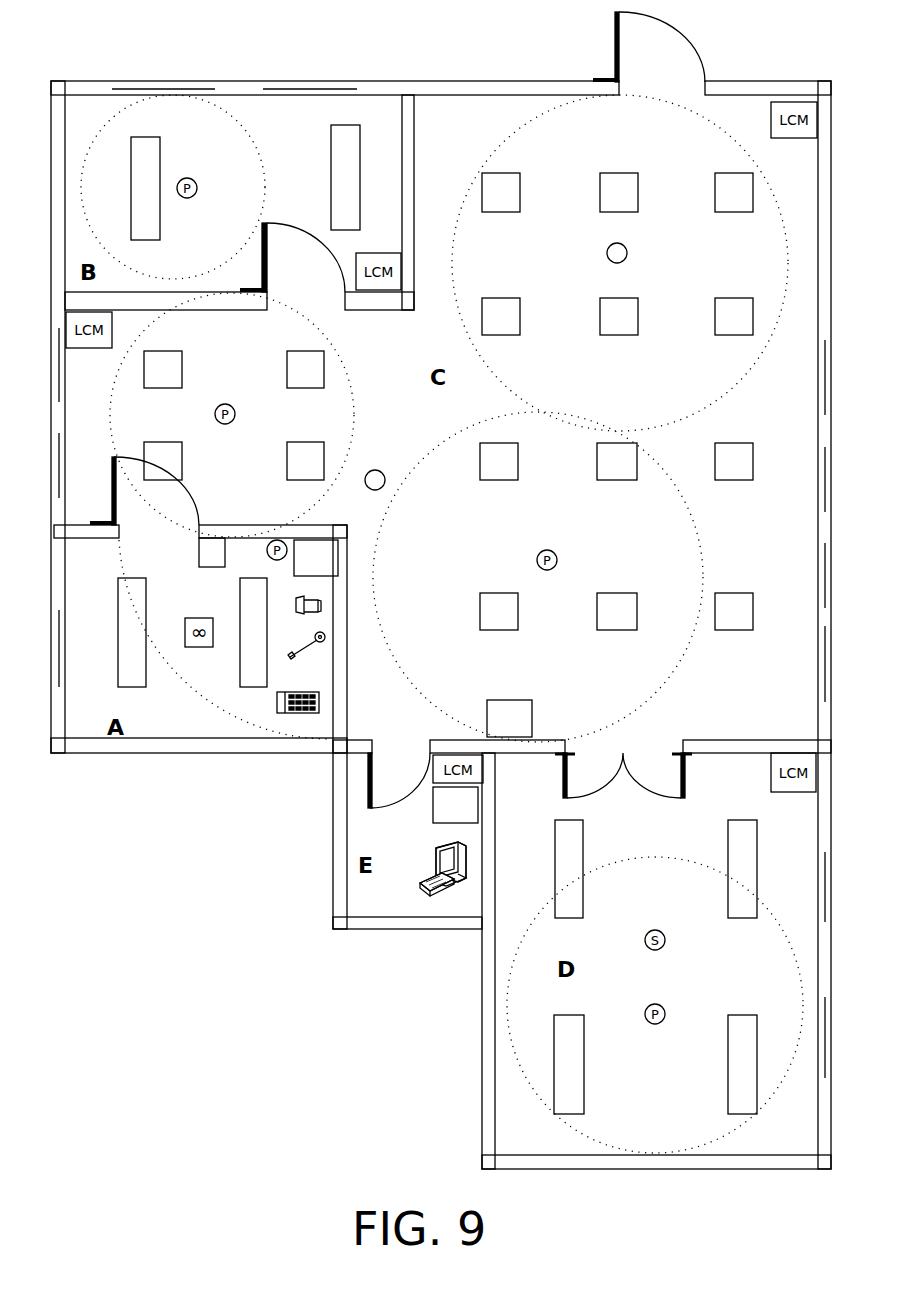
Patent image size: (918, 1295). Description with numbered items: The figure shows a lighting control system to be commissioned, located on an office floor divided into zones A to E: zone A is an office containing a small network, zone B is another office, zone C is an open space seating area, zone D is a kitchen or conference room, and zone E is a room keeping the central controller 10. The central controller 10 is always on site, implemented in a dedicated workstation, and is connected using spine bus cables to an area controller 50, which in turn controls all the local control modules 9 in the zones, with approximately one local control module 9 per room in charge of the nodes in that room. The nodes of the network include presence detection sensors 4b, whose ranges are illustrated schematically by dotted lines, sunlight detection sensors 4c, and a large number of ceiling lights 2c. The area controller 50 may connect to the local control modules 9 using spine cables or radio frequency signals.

The ceiling lights 2c is at (735, 298).
The presence detection sensors 4b is at (607, 253).
The sunlight detection sensors 4c is at (376, 470).
The local control modules 9 is at (338, 560).
The area controller 50 is at (433, 805).
The central controller 10 is at (418, 884).